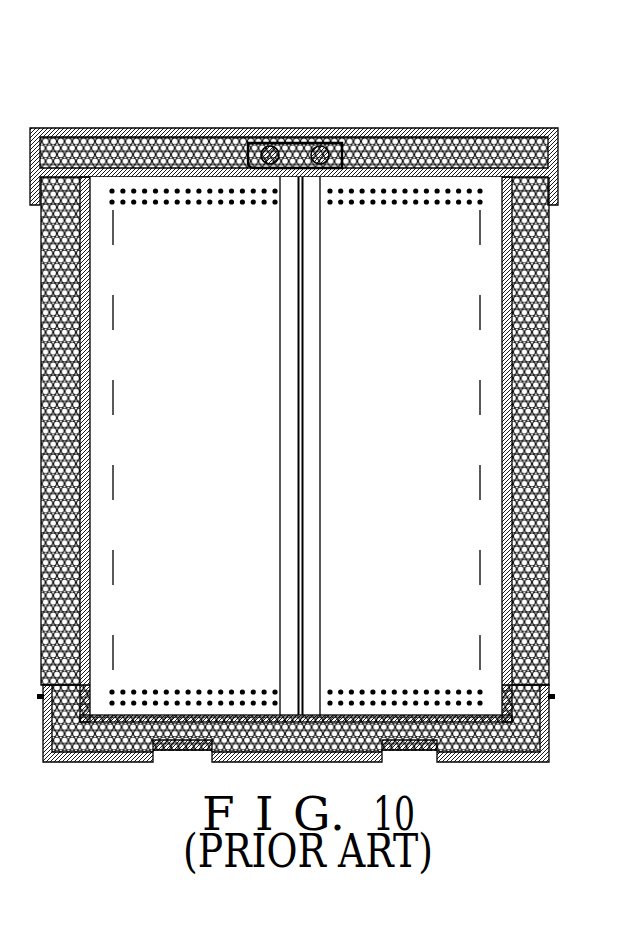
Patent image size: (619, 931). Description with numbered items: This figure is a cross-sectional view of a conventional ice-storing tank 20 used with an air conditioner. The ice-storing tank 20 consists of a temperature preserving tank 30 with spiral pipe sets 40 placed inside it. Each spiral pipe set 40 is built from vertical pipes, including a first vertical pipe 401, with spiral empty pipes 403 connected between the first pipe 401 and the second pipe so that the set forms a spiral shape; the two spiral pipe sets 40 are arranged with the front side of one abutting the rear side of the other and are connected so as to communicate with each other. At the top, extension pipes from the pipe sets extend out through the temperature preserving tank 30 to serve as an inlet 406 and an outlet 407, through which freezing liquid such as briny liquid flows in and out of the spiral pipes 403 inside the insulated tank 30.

The spiral pipe set 40 is at (462, 44).
The first vertical pipe 401 is at (287, 240).
The spiral empty pipes 403 is at (145, 190).
The inlet 406 is at (270, 147).
The outlet 407 is at (341, 145).
The temperature preserving tank 30 is at (552, 330).
The ice-storing tank 20 is at (148, 775).